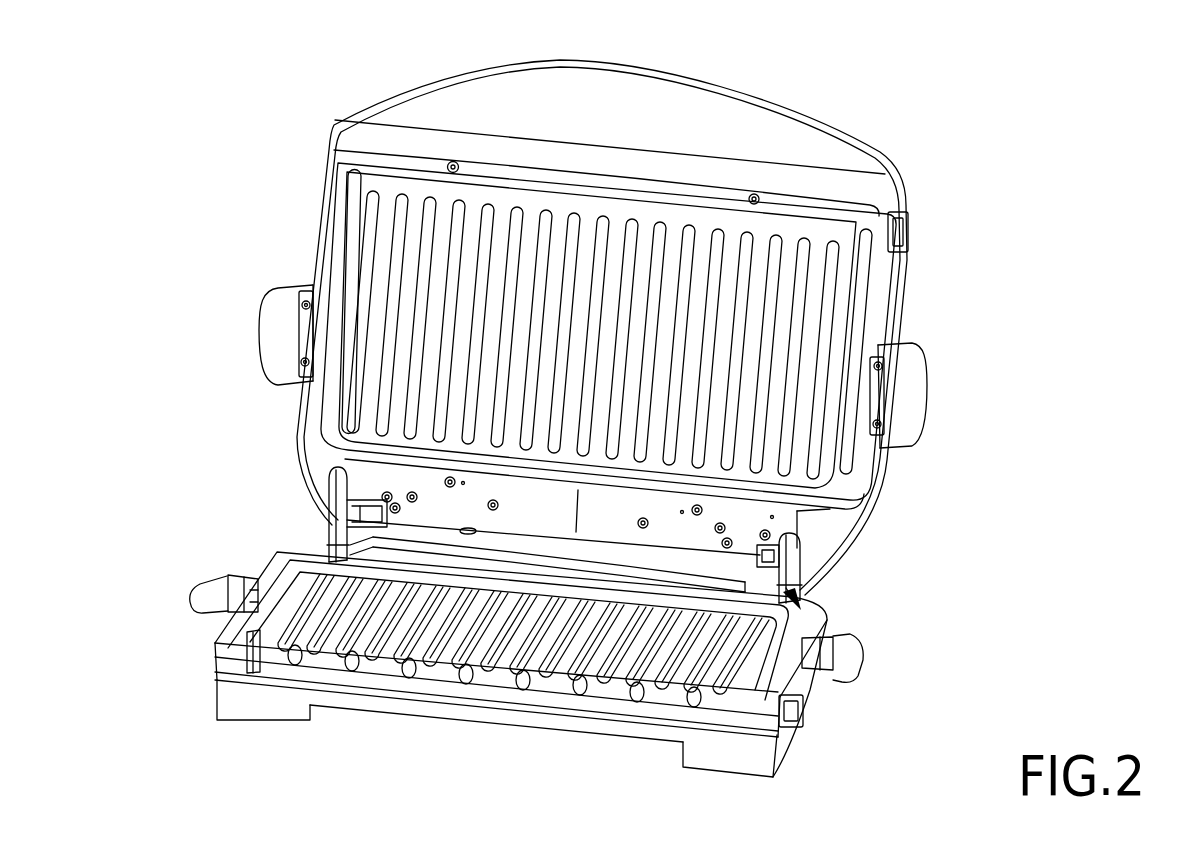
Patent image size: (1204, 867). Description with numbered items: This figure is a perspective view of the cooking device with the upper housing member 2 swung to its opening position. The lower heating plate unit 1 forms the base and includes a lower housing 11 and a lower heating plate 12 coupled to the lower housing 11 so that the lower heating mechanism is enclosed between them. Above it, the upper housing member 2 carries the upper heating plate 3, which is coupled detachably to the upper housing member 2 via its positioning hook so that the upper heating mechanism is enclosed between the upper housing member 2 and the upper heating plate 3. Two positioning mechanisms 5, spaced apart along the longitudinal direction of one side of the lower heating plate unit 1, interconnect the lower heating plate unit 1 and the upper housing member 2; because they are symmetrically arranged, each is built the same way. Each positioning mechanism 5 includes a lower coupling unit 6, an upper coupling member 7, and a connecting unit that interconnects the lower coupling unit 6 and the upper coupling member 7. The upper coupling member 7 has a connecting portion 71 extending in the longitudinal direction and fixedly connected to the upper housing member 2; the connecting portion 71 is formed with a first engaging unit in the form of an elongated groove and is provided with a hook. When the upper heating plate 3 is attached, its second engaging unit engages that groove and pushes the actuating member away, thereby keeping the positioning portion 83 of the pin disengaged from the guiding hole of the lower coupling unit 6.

The lower heating plate unit 1 is at (426, 724).
The lower housing 11 is at (282, 713).
The lower heating plate 12 is at (618, 672).
The upper housing member 2 is at (785, 167).
The upper heating plate 3 is at (790, 311).
The positioning mechanism 5 is at (316, 516).
The lower coupling unit 6 is at (817, 610).
The upper coupling member 7 is at (549, 513).
The connecting portion 71 is at (508, 503).
The positioning portion 83 is at (803, 552).